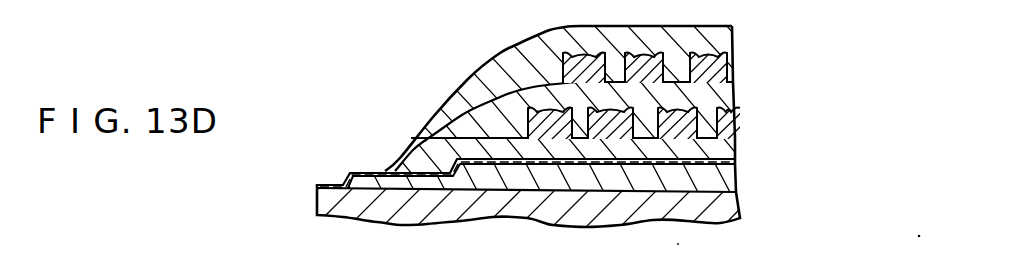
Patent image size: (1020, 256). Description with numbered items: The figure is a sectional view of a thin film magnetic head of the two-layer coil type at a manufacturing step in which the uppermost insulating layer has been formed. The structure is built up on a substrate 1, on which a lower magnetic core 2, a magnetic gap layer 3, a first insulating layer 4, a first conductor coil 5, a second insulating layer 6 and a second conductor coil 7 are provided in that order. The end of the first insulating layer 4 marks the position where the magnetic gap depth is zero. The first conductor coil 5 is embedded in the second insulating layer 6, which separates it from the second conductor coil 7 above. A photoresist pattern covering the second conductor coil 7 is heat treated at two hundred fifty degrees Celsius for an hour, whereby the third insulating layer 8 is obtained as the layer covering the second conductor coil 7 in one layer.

The substrate 1 is at (317, 210).
The lower magnetic core 2 is at (362, 173).
The magnetic gap layer 3 is at (323, 187).
The first insulating layer 4 is at (410, 139).
The first conductor coil 5 is at (734, 122).
The second insulating layer 6 is at (450, 124).
The second conductor coil 7 is at (733, 59).
The third insulating layer 8 is at (463, 82).